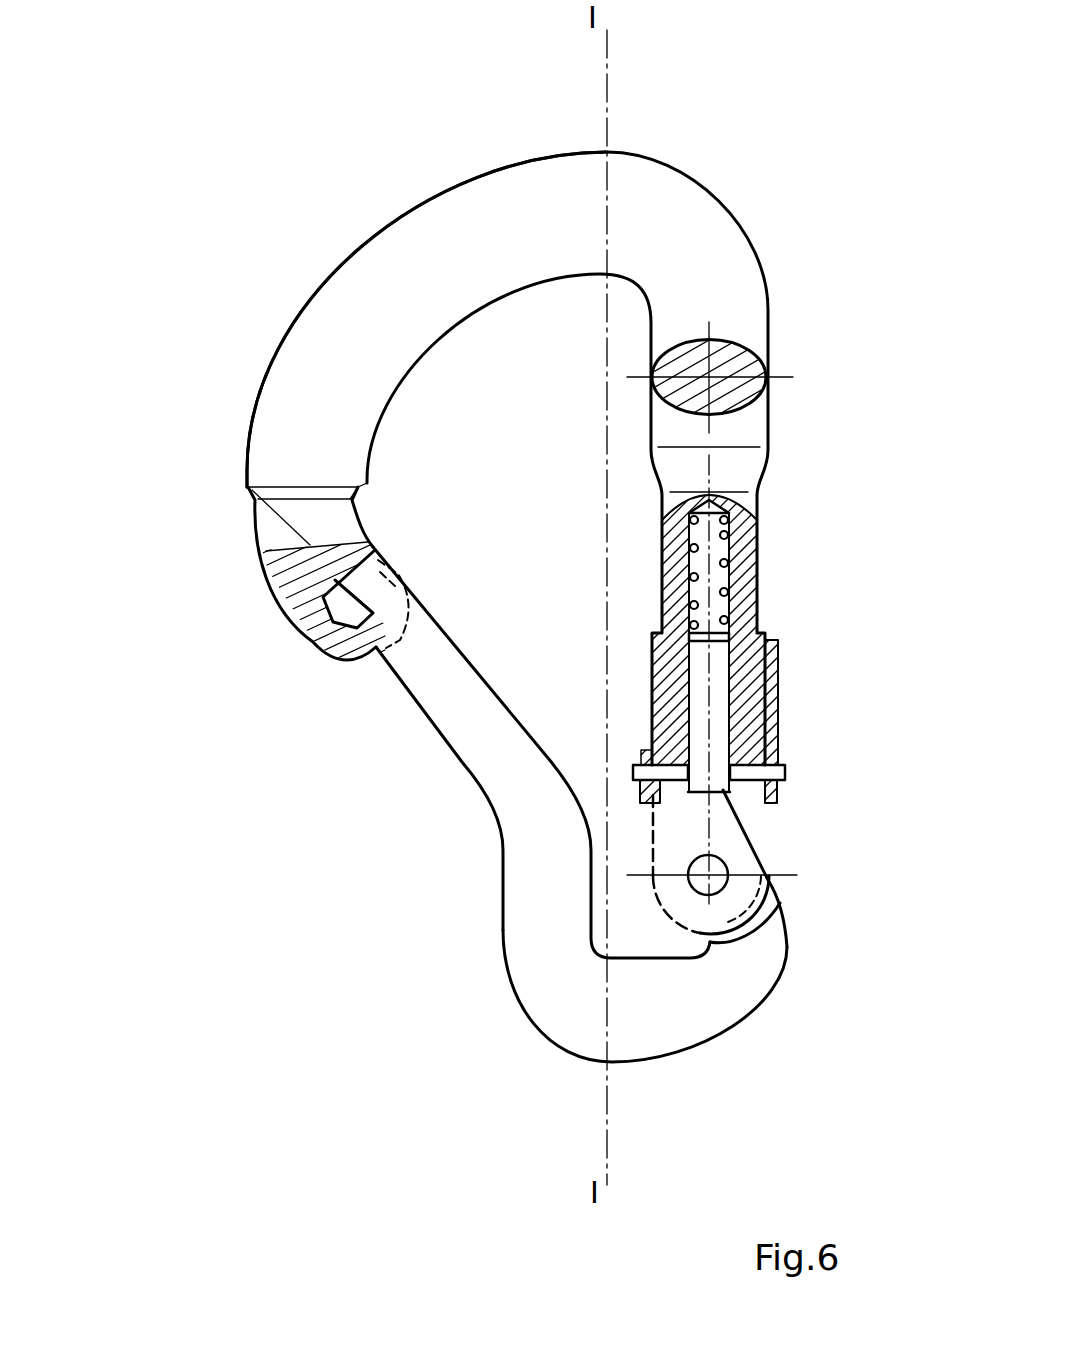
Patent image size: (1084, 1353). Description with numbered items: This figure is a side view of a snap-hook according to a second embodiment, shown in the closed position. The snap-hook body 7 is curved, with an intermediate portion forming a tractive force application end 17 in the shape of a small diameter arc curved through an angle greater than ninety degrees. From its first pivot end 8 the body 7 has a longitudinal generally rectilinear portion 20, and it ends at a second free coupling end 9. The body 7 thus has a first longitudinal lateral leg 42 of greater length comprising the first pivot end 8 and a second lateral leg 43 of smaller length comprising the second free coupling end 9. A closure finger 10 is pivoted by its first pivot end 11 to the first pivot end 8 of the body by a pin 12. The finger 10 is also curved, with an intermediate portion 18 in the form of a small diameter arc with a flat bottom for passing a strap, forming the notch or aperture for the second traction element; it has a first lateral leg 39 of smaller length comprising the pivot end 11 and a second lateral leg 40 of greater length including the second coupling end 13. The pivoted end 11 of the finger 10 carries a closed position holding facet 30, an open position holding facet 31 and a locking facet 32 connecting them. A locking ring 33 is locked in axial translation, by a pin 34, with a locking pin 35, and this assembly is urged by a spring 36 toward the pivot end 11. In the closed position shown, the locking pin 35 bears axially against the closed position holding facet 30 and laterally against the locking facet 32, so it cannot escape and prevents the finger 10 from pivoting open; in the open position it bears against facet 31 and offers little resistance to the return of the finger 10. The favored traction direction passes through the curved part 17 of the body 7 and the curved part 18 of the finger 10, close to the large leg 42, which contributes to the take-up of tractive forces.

The snap-hook body 7 is at (345, 318).
The first pivot end 8 is at (750, 810).
The second free coupling end 9 is at (283, 539).
The closure finger 10 is at (530, 940).
The first pivot end of finger 11 is at (670, 887).
The pin 12 is at (715, 880).
The second coupling end of finger 13 is at (368, 576).
The tractive force application end 17 is at (657, 255).
The intermediate portion of finger 18 is at (677, 943).
The longitudinal generally rectilinear portion 20 is at (780, 727).
The closed position holding facet 30 is at (715, 806).
The open position holding facet 31 is at (635, 752).
The locking facet 32 is at (790, 770).
The locking ring 33 is at (730, 568).
The pin 34 is at (697, 780).
The locking pin 35 is at (730, 675).
The spring 36 is at (768, 560).
The first lateral leg 39 is at (752, 938).
The second lateral leg 40 is at (487, 762).
The first longitudinal lateral leg 42 is at (750, 368).
The second lateral leg 43 is at (290, 406).